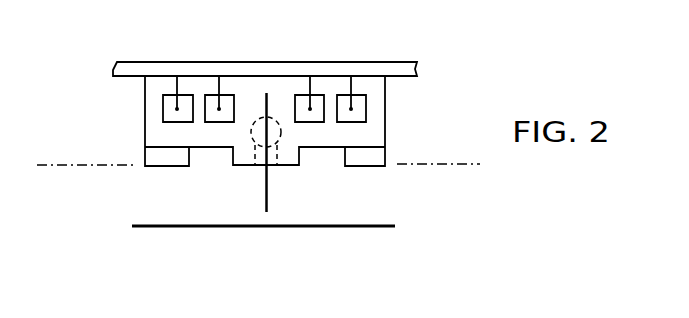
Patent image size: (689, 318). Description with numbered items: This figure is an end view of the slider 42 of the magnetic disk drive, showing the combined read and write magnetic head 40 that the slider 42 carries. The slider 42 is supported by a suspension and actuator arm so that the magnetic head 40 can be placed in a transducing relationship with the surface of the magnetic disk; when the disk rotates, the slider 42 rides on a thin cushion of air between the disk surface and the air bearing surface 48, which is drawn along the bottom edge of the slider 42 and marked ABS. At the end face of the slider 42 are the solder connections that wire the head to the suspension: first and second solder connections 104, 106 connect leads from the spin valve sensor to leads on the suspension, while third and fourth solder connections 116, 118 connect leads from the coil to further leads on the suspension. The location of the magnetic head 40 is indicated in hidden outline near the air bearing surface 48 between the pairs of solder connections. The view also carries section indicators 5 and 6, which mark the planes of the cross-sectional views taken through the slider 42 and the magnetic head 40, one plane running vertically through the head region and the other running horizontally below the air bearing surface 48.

The slider 42 is at (145, 110).
The magnetic head 40 is at (252, 176).
The air bearing surface (ABS) 48 is at (66, 167).
The first solder connection 104 is at (163, 97).
The third solder connection 116 is at (205, 97).
The fourth solder connection 118 is at (295, 96).
The second solder connection 106 is at (338, 96).
The section line 5- 5 is at (153, 228).
The section line 6- 6 is at (268, 101).